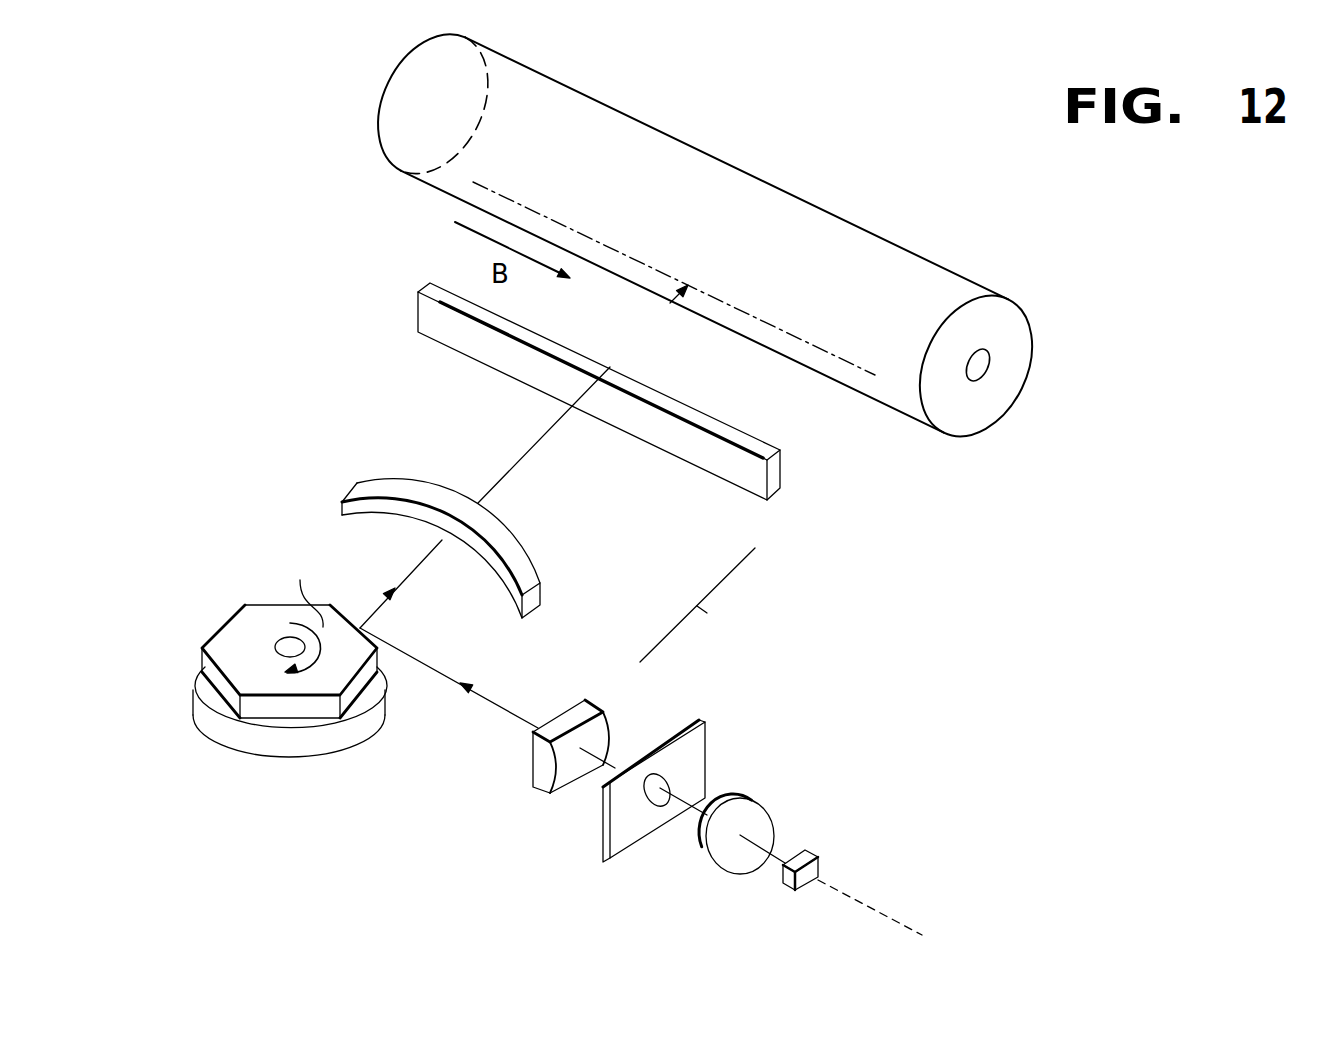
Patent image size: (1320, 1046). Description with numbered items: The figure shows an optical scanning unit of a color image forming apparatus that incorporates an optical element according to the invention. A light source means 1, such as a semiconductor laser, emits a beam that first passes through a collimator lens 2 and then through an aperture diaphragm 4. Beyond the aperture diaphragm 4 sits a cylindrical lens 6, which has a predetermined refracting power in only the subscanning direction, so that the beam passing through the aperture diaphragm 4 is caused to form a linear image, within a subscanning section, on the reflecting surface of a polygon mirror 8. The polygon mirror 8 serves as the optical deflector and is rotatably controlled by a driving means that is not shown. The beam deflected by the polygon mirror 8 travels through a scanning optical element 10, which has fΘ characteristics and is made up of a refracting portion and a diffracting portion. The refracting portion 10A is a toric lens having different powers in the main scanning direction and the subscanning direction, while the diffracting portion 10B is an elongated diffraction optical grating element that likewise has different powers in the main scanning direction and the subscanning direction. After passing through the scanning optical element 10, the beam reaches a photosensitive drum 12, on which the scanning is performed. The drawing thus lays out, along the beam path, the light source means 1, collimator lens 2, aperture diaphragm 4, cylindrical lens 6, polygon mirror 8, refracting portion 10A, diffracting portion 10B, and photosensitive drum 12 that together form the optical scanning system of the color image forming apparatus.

The light source means 1 is at (793, 887).
The collimator lens 2 is at (722, 855).
The aperture diaphragm 4 is at (620, 820).
The cylindrical lens 6 is at (540, 778).
The polygon mirror 8 is at (230, 637).
The scanning optical element 10 is at (697, 605).
The refracting portion 10A is at (538, 595).
The diffracting portion 10B is at (713, 463).
The photosensitive drum 12 is at (923, 277).